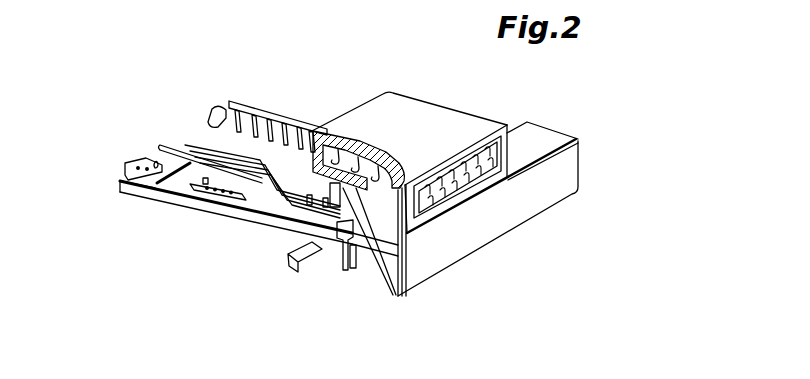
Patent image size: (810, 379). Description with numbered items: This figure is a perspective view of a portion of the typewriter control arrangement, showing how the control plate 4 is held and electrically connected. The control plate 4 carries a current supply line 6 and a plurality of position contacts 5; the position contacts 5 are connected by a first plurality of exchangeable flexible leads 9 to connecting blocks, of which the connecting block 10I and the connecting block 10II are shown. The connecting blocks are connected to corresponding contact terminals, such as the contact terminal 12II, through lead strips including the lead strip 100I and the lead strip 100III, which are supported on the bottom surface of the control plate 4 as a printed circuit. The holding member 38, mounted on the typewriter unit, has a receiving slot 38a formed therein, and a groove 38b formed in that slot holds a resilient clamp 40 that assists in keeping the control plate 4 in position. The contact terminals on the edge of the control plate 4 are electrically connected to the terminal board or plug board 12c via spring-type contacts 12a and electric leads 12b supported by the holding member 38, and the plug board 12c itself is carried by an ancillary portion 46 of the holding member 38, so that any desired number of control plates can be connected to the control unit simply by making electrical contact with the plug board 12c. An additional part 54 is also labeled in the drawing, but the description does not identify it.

The control plate 4 is at (174, 188).
The position contacts 5 is at (257, 122).
The current supply line 6 is at (298, 122).
The exchangeable flexible leads 9 is at (205, 178).
The connecting block 10I is at (212, 193).
The connecting block 10II is at (119, 184).
The spring-type contacts 12a is at (395, 292).
The electric leads 12b is at (391, 172).
The plug board 12c is at (423, 200).
The contact terminal 12II is at (340, 270).
The holding member 38 is at (578, 174).
The receiving slot 38a is at (345, 266).
The groove 38b is at (318, 272).
The resilient clamp 40 is at (288, 262).
The ancillary portion 46 is at (468, 123).
The guide block 54 is at (155, 168).
The lead strip 100I is at (253, 204).
The lead strip 100III is at (163, 146).